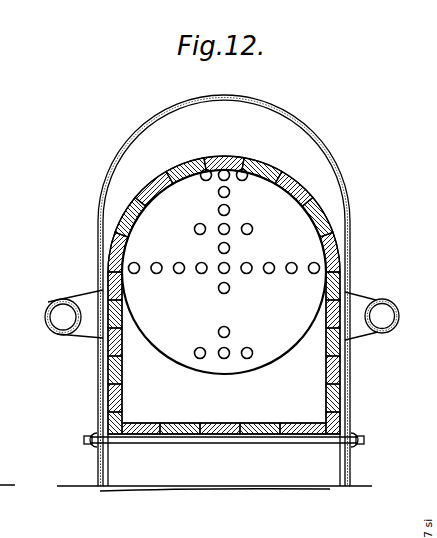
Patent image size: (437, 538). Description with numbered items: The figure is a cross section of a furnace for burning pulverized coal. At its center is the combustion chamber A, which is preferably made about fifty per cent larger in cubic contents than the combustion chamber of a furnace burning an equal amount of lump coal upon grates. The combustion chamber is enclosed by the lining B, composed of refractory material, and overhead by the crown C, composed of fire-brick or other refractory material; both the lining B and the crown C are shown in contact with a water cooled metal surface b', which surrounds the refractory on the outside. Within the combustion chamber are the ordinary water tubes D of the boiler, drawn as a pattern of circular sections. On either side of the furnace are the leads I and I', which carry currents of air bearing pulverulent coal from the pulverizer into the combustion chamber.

The water cooled metal surface b' is at (192, 290).
The lining of the combustion chamber B is at (327, 360).
The combustion chamber A is at (224, 293).
The crown of the combustion chamber C is at (249, 180).
The water tubes of the boiler D is at (195, 224).
The lead for currents of air bearing pulverulent coal I is at (59, 314).
The lead for currents of air bearing pulverulent coal I' is at (383, 316).